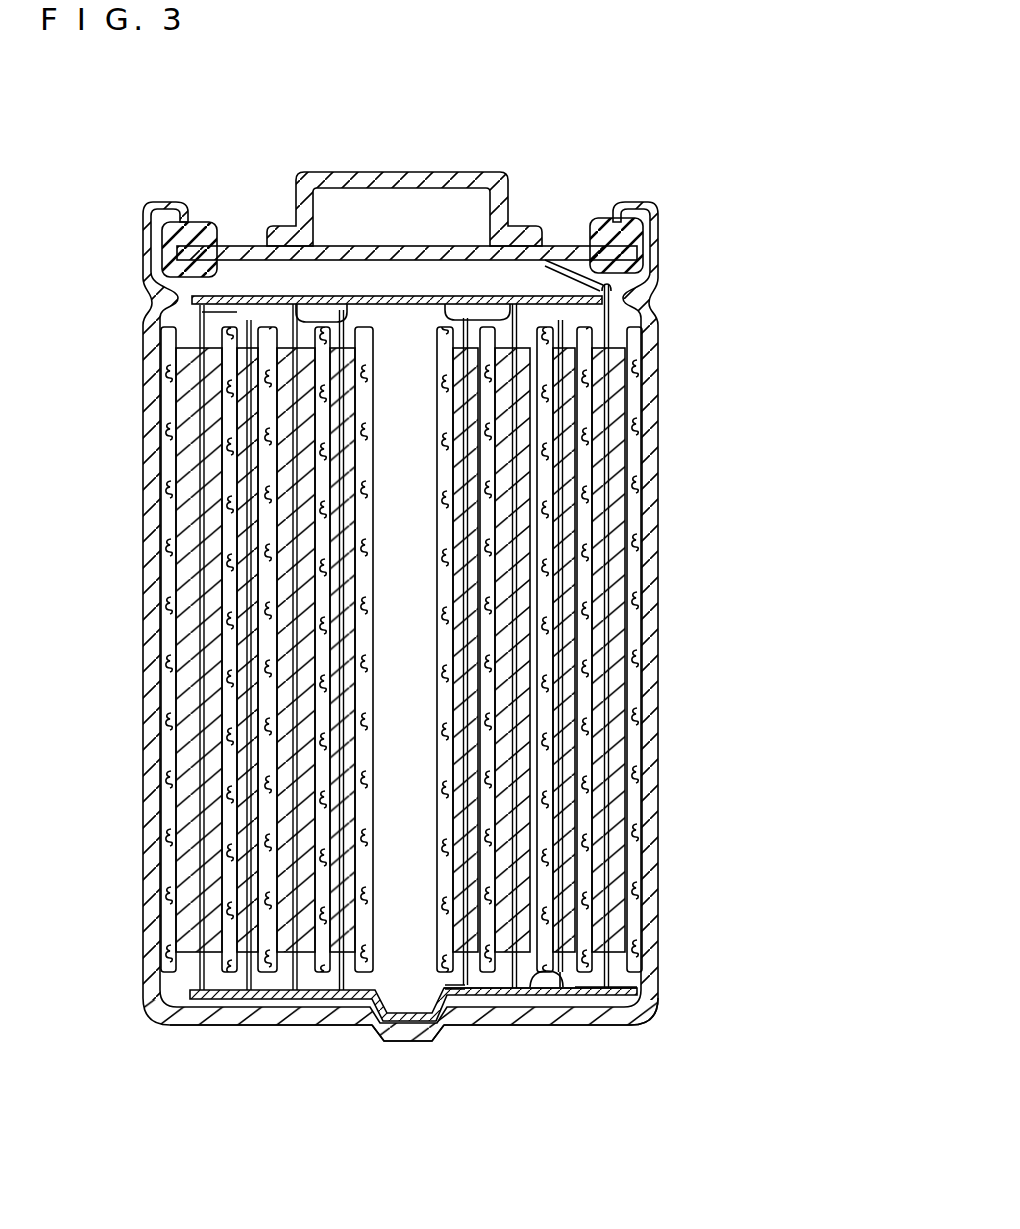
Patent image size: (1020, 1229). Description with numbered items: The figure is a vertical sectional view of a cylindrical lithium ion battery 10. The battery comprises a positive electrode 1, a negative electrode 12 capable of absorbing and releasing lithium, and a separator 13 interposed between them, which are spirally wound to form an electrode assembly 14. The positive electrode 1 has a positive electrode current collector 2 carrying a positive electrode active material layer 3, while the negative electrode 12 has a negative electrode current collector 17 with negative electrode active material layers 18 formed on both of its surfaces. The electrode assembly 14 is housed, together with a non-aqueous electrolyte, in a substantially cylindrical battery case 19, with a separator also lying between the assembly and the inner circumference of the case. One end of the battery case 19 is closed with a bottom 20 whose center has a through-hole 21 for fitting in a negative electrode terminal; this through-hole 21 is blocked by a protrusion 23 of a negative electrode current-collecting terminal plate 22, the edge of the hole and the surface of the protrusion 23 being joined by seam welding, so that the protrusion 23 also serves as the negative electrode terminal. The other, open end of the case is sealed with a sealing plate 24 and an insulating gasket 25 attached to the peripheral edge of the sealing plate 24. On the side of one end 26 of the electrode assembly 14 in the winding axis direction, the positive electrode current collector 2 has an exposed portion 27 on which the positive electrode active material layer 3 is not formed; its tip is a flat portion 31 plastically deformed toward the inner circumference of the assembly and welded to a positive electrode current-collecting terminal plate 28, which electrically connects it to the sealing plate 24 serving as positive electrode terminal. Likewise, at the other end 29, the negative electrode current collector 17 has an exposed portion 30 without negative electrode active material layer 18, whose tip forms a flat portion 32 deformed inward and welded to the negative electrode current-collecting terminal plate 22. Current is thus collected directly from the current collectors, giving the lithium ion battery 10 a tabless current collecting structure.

The lithium ion battery 10 is at (573, 130).
The positive electrode 1 is at (717, 467).
The positive electrode current collector 2 is at (615, 495).
The positive electrode active material layer 3 is at (618, 552).
The negative electrode 12 is at (712, 588).
The separator 13 is at (606, 580).
The electrode assembly 14 is at (760, 475).
The negative electrode current collector 17 is at (595, 617).
The negative electrode active material layers 18 is at (600, 657).
The battery case 19 is at (652, 1020).
The bottom 20 is at (603, 1029).
The through-hole 21 is at (376, 1029).
The negative electrode current-collecting terminal plate 22 is at (210, 999).
The protrusion 23 is at (416, 1042).
The sealing plate 24 is at (243, 246).
The insulating gasket 25 is at (205, 222).
The one end 26 is at (420, 344).
The exposed portion 27 is at (499, 317).
The positive electrode current-collecting terminal plate 28 is at (410, 298).
The other end 29 is at (424, 999).
The exposed portion 30 is at (586, 1008).
The flat portion 31 is at (345, 318).
The flat portion 32 is at (546, 993).